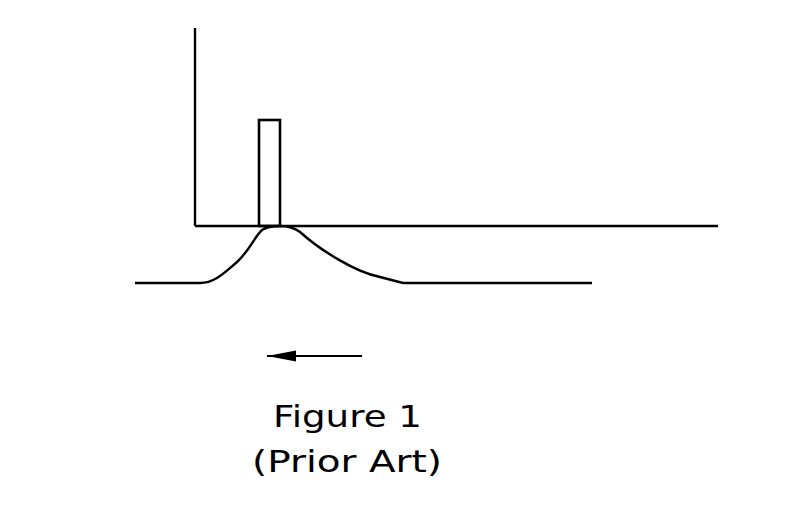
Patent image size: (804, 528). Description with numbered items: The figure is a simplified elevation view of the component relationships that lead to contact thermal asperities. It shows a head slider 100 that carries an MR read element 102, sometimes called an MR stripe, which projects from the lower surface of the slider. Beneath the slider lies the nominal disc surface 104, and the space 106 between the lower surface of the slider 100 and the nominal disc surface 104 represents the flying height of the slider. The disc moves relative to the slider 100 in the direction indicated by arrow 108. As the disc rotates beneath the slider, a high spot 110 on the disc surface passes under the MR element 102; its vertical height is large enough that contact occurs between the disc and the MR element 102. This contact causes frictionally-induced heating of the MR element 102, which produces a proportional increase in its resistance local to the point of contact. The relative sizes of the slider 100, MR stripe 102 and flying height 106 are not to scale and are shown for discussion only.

The head slider 100 is at (195, 72).
The MR read element 102 is at (280, 147).
The nominal disc surface 104 is at (152, 283).
The flying height 106 is at (465, 258).
The arrow 108 is at (324, 356).
The high spot 110 is at (235, 262).